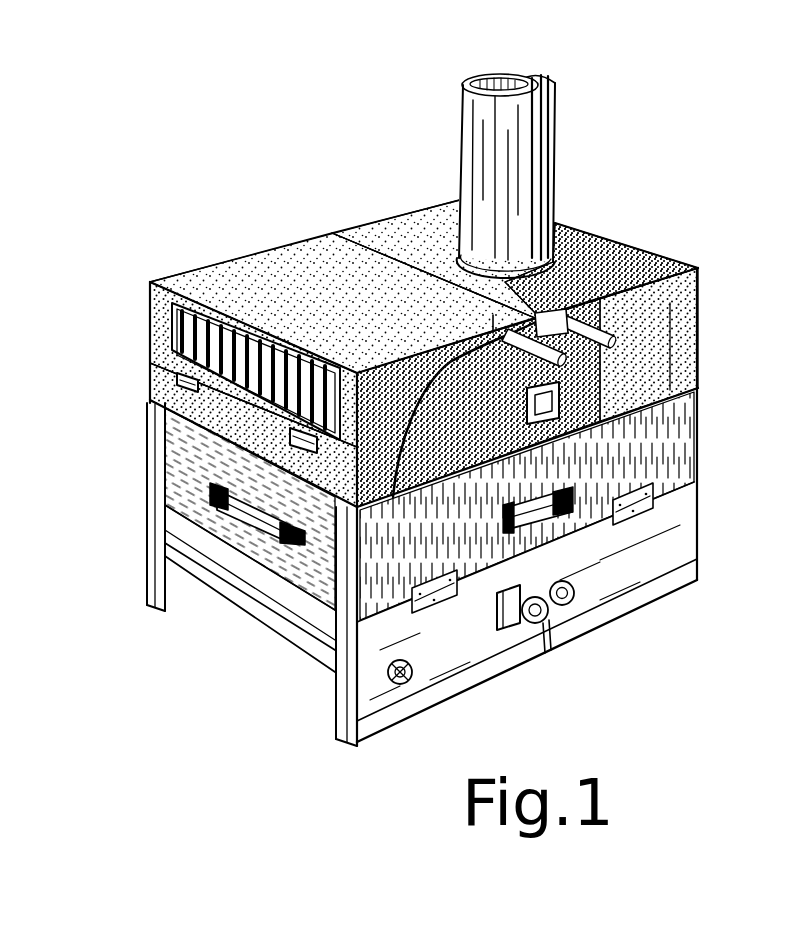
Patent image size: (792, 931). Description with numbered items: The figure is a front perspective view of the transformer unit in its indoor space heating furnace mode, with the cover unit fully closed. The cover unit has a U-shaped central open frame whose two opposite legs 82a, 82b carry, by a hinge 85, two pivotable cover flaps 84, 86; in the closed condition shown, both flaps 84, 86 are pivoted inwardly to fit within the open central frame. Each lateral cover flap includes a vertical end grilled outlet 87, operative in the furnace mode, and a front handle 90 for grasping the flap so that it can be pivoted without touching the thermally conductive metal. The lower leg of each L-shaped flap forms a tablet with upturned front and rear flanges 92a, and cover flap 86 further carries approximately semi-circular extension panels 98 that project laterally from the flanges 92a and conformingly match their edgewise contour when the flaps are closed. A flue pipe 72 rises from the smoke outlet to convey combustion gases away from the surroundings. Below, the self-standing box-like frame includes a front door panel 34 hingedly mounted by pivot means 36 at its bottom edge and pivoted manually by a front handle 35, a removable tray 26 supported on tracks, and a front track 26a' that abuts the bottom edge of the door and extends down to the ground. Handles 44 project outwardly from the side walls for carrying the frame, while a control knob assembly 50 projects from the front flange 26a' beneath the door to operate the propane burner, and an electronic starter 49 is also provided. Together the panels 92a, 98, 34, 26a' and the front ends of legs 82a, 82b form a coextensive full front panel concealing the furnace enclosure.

The flue pipe 72 is at (530, 204).
The cover flap 84 is at (305, 266).
The cover flap 86 is at (413, 232).
The end grilled outlet 87 is at (148, 326).
The front handle 90 is at (603, 240).
The upturned flange 92a is at (684, 262).
The extension panel 98 is at (695, 308).
The frame leg 82a is at (703, 352).
The frame leg 82b is at (150, 418).
The hinge 85 is at (175, 384).
The front door panel 34 is at (673, 462).
The front handle 35 is at (540, 508).
The pivot means 36 is at (635, 512).
The handle 44 is at (232, 520).
The removable tray 26 is at (285, 592).
The front track 26a' is at (527, 633).
The electronic starter 49 is at (417, 672).
The control knob assembly 50 is at (500, 653).